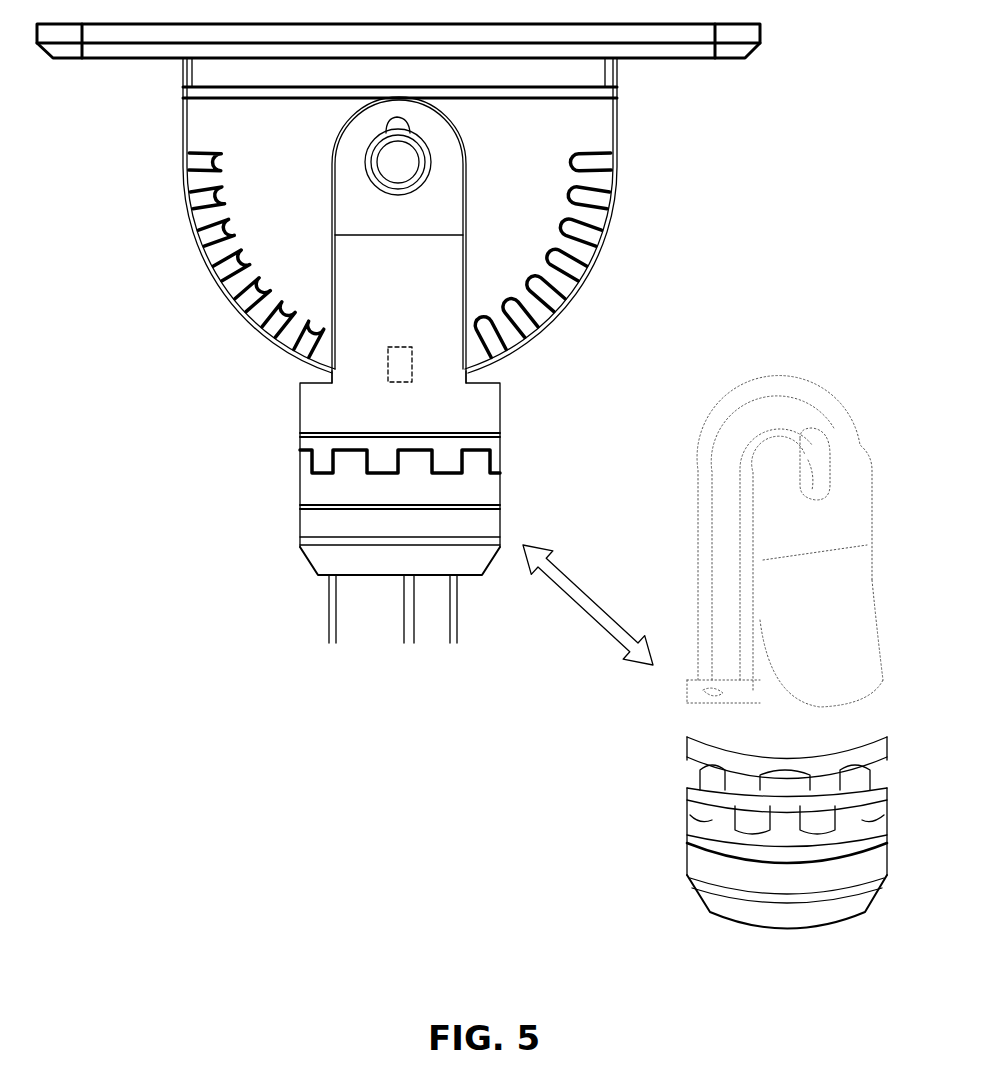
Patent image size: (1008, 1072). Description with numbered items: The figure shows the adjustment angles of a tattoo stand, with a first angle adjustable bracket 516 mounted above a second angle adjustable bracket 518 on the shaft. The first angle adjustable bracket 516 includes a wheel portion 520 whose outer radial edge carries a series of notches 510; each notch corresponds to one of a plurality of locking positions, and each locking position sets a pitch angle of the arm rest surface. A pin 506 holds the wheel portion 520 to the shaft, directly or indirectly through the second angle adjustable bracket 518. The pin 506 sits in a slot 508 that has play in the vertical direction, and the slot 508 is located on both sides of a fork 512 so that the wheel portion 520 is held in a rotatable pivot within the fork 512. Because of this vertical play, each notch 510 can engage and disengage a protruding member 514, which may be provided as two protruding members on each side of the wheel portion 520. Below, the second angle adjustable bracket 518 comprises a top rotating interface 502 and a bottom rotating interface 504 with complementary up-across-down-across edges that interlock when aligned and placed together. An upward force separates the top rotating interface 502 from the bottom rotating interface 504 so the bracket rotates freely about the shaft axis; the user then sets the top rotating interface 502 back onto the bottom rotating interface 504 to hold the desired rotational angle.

The top rotating interface 502 is at (318, 450).
The bottom rotating interface 504 is at (318, 488).
The pin 506 is at (393, 162).
The slot 508 is at (395, 118).
The notches 510 is at (232, 296).
The fork 512 is at (455, 210).
The protruding member 514 is at (410, 381).
The first angle adjustable bracket 516 is at (165, 148).
The second angle adjustable bracket 518 is at (506, 463).
The wheel portion 520 is at (230, 218).